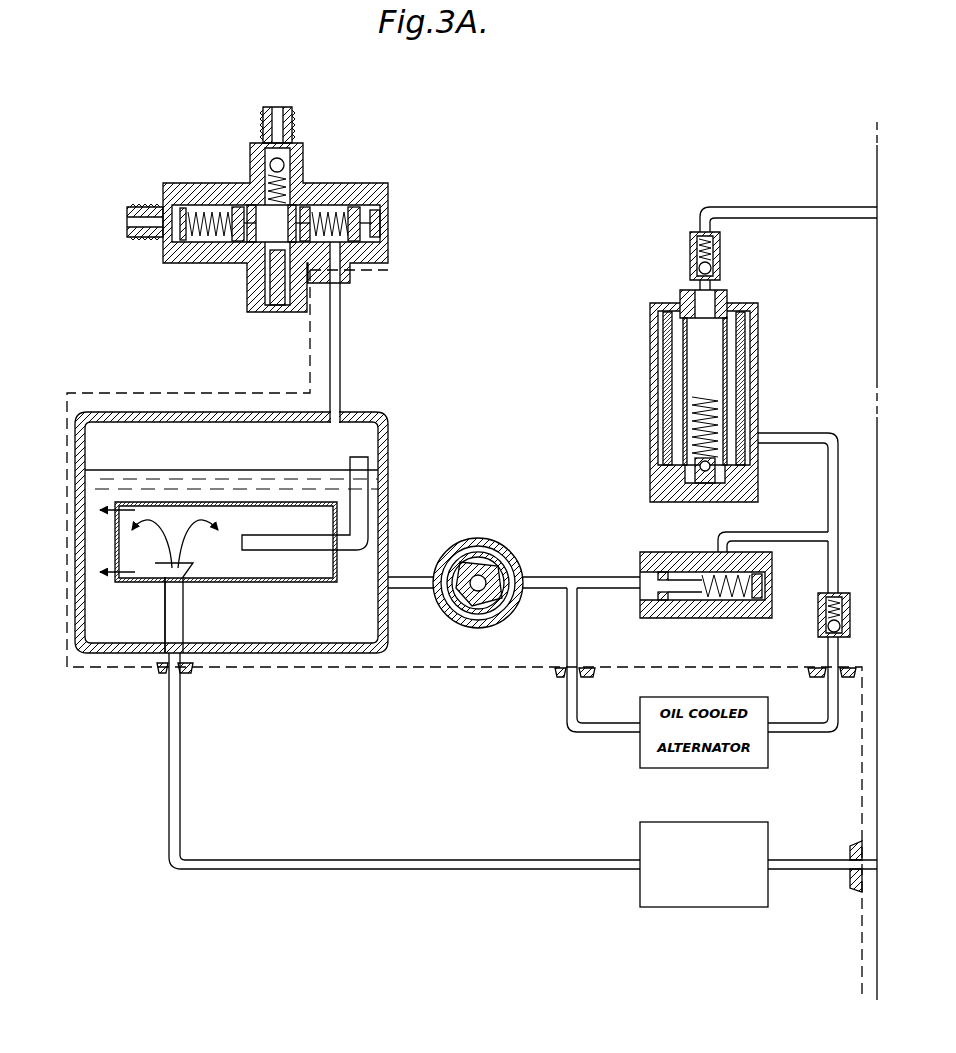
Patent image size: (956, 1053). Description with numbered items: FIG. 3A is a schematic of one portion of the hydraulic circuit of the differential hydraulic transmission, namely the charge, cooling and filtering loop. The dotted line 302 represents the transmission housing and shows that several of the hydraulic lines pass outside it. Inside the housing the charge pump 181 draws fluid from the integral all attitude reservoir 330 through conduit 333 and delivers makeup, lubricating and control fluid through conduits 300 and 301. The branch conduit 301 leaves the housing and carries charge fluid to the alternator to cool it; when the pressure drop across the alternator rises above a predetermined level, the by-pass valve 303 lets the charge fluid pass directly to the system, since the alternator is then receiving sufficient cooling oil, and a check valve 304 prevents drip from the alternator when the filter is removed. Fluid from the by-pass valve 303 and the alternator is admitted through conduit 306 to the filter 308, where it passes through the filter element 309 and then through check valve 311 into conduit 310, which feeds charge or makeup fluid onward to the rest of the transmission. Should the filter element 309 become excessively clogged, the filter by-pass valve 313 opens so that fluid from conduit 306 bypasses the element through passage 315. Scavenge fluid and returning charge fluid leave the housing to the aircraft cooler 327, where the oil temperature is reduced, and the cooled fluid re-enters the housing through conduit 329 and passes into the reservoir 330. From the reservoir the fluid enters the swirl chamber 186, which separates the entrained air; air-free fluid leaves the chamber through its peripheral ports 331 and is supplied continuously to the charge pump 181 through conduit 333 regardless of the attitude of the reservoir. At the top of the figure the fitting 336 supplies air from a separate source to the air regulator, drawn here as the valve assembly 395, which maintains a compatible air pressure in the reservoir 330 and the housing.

The fitting 336 is at (294, 118).
The pressure regulating valve 395 is at (257, 209).
The all attitude reservoir 330 is at (372, 406).
The swirl chamber 186 is at (290, 504).
The peripheral ports 331 is at (115, 578).
The conduit 333 is at (408, 578).
The charge pump 181 is at (492, 538).
The conduit 300 is at (601, 570).
The branch conduit 301 is at (578, 642).
The dotted line 302 is at (345, 668).
The conduit 329 is at (180, 738).
The by-pass valve 303 is at (668, 540).
The check valve 304 is at (818, 623).
The conduit 306 is at (798, 433).
The filter 308 is at (699, 396).
The filter element 309 is at (745, 341).
The conduit 310 is at (814, 207).
The check valve 311 is at (721, 262).
The filter by-pass valve 313 is at (690, 433).
The passage 315 is at (726, 485).
The aircraft cooler 327 is at (652, 905).